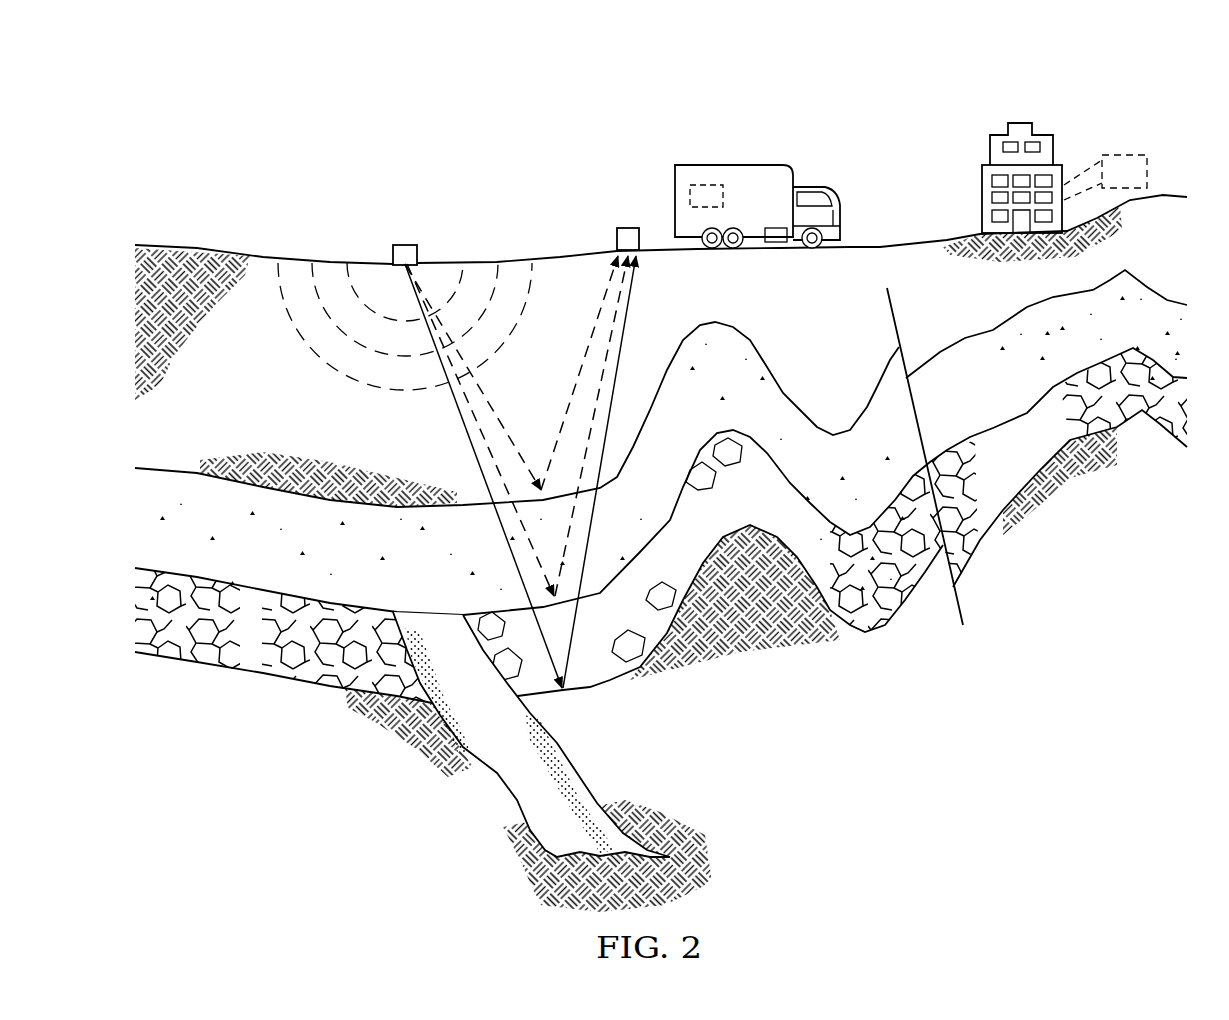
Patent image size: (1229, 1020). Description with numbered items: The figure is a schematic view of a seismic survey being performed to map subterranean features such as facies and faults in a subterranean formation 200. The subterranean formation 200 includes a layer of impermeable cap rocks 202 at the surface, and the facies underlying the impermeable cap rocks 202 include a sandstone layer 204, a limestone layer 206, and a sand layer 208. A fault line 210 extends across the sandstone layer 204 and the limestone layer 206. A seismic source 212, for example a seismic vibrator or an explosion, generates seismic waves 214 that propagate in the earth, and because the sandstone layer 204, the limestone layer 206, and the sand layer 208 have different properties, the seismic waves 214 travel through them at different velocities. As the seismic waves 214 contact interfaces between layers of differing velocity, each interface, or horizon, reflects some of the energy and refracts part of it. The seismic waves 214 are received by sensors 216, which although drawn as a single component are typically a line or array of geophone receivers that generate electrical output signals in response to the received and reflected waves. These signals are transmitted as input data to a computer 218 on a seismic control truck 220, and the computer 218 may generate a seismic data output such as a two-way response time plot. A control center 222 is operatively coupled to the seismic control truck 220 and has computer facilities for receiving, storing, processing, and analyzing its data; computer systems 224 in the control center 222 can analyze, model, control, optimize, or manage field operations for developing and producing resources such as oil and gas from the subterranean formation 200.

The subterranean formation 200 is at (460, 144).
The impermeable cap rocks 202 is at (214, 396).
The sandstone layer 204 is at (421, 564).
The limestone layer 206 is at (172, 633).
The sand layer 208 is at (463, 734).
The fault line 210 is at (888, 310).
The seismic source 212 is at (405, 245).
The seismic waves 214 is at (362, 386).
The sensors 216 is at (628, 228).
The computer 218 is at (705, 185).
The seismic control truck 220 is at (745, 165).
The control center 222 is at (982, 192).
The computer systems 224 is at (1135, 155).